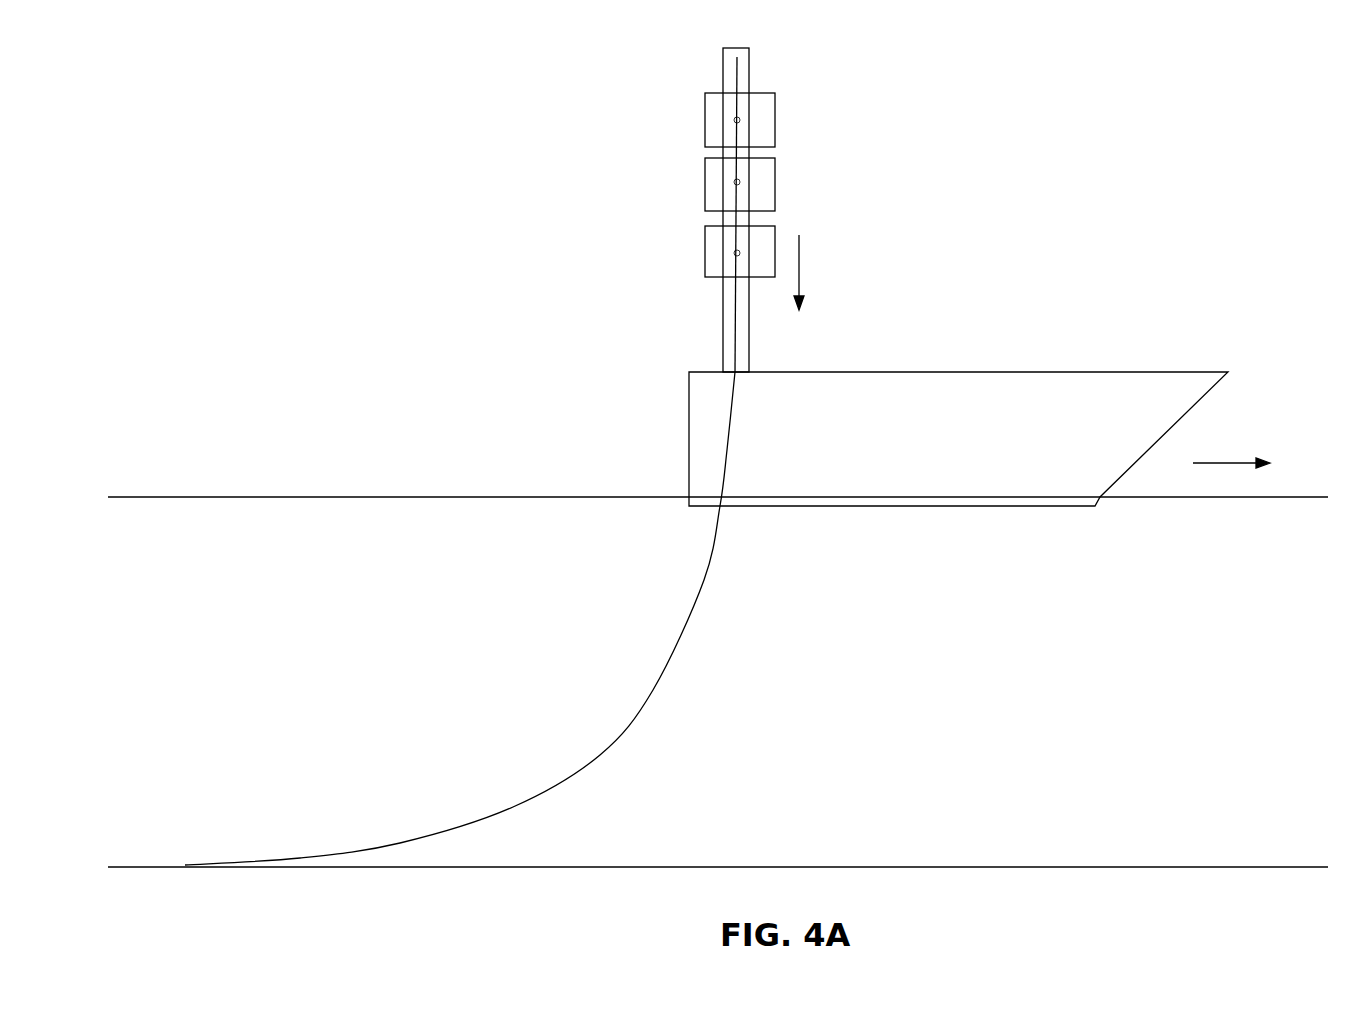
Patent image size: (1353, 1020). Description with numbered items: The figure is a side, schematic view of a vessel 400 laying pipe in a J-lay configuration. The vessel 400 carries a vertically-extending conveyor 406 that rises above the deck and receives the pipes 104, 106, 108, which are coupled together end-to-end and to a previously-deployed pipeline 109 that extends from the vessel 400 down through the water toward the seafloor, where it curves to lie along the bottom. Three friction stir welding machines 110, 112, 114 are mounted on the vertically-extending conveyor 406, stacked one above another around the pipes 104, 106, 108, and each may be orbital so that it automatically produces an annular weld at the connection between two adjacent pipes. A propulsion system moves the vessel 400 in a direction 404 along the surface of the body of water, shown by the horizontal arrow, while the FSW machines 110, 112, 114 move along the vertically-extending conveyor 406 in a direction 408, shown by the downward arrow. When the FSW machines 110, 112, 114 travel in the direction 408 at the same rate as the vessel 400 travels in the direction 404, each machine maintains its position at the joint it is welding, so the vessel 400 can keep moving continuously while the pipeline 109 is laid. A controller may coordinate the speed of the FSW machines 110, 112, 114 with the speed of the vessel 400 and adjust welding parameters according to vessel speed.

The vessel 400 is at (1153, 372).
The direction 404 is at (1228, 463).
The vertically-extending conveyor 406 is at (750, 58).
The direction 408 is at (800, 262).
The pipe 104 is at (738, 75).
The pipe 106 is at (738, 150).
The pipe 108 is at (738, 218).
The previously-deployed pipeline 109 is at (704, 580).
The friction stir welding machine 110 is at (705, 247).
The friction stir welding machine 112 is at (705, 183).
The friction stir welding machine 114 is at (705, 119).